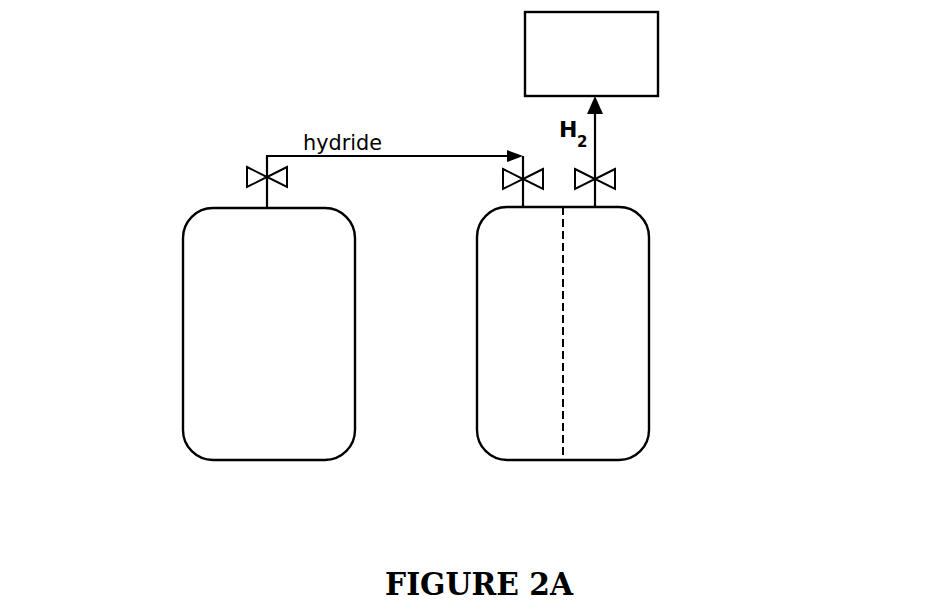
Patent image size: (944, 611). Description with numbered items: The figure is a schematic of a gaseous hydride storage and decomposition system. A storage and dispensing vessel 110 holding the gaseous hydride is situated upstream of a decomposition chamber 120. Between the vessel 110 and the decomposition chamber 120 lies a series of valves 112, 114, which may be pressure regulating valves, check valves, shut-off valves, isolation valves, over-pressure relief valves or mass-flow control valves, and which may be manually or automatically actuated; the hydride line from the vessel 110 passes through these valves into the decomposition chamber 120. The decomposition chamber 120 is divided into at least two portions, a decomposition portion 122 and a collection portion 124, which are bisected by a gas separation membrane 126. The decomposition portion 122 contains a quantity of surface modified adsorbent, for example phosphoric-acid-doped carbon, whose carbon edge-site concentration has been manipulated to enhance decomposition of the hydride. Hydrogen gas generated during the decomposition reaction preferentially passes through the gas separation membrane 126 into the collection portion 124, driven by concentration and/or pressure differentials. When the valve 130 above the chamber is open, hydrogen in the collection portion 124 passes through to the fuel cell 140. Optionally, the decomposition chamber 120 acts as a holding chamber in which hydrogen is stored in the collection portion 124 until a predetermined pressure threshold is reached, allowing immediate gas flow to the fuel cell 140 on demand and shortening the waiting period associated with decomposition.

The storage and dispensing vessel 110 is at (226, 284).
The valve 112 is at (263, 168).
The valve 114 is at (501, 178).
The decomposition chamber 120 is at (668, 238).
The decomposition portion 122 is at (500, 380).
The collection portion 124 is at (627, 365).
The gas separation membrane 126 is at (572, 410).
The valve 130 is at (617, 170).
The fuel cell 140 is at (612, 35).